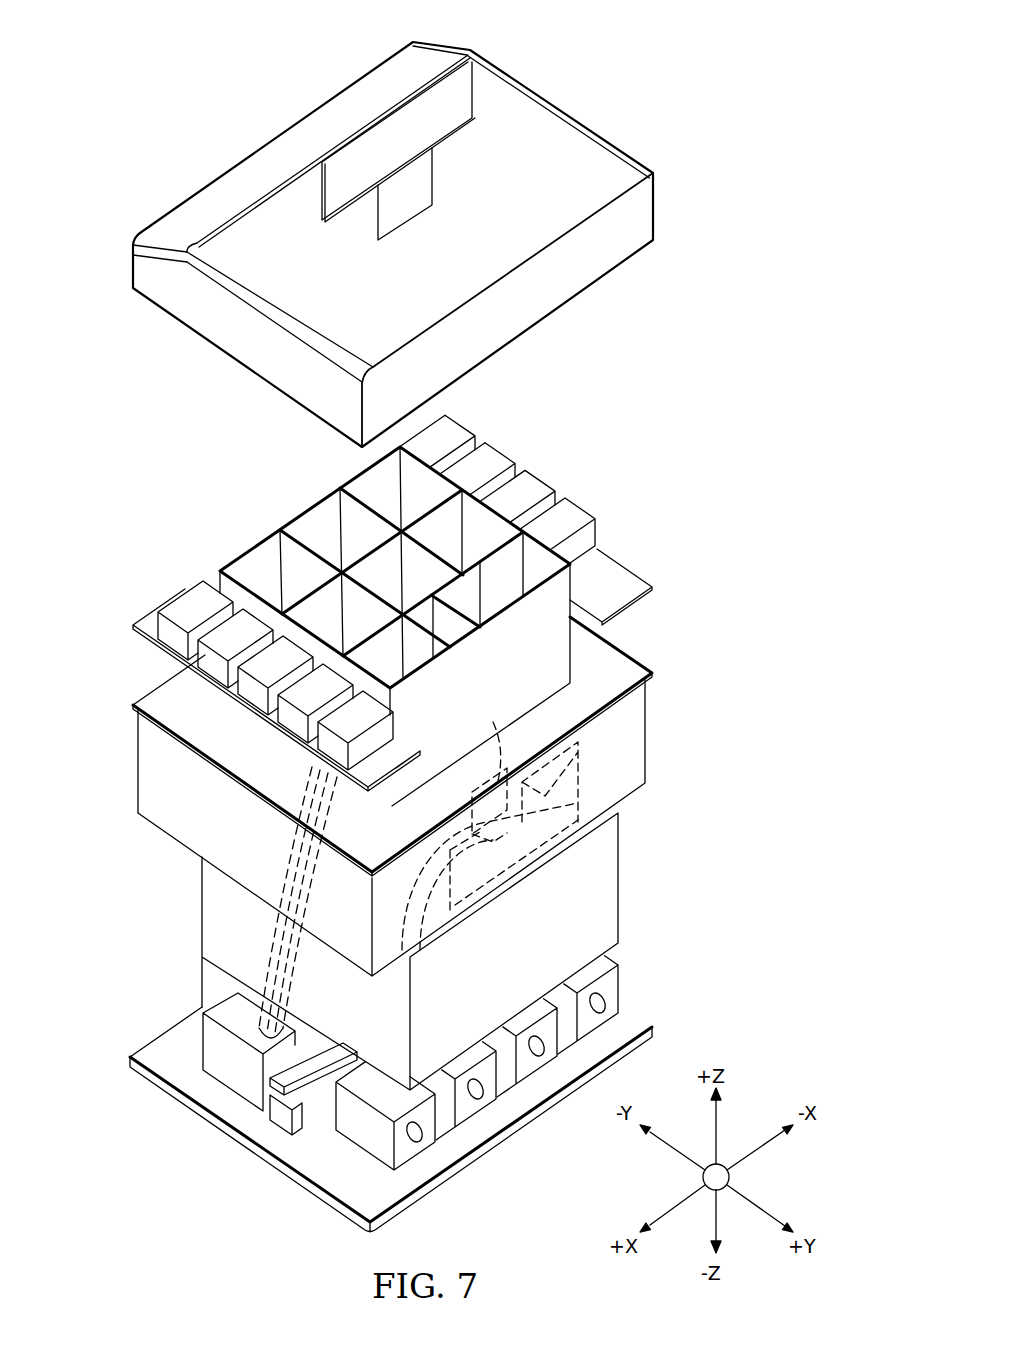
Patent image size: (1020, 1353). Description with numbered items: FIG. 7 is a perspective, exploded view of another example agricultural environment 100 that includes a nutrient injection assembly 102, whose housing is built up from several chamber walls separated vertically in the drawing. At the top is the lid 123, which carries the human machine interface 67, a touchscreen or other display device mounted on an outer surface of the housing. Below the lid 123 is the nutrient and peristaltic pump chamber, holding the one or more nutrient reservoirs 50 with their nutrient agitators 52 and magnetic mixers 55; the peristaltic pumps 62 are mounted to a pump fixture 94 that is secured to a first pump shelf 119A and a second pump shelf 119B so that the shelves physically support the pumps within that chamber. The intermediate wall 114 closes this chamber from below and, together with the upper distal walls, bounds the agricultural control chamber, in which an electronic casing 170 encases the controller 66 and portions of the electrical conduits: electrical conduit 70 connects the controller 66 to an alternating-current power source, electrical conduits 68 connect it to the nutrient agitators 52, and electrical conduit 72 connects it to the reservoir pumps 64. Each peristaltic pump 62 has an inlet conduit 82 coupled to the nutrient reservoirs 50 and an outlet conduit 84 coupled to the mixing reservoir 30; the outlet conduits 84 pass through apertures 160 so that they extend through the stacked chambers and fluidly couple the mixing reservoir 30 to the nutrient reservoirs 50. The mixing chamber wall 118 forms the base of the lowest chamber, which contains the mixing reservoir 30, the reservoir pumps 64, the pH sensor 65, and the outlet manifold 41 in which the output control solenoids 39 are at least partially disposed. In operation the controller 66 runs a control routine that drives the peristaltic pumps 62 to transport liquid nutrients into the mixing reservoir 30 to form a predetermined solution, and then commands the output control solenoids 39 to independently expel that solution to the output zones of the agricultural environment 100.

The agricultural environment 100 is at (668, 43).
The nutrient injection assembly 102 is at (686, 329).
The lid 123 is at (568, 128).
The human machine interface (HMI) 67 is at (373, 118).
The nutrient reservoirs 50 is at (451, 611).
The nutrient agitators 52 is at (451, 611).
The magnetic mixers 55 is at (472, 522).
The peristaltic pumps 62 is at (540, 489).
The pump fixture 94 is at (580, 508).
The first pump shelf 119A is at (638, 583).
The second pump shelf 119B is at (145, 625).
The intermediate wall 114 is at (627, 667).
The electronic casing 170 is at (637, 738).
The electrical conduit 70 is at (488, 738).
The electrical conduits 68 is at (484, 828).
The electrical conduit 72 is at (560, 777).
The controller 66 is at (578, 803).
The mixing reservoir 30 is at (208, 945).
The apertures 160 is at (300, 805).
The inlet conduit 82 is at (180, 849).
The outlet conduit 84 is at (272, 832).
The mixing chamber wall 118 is at (322, 1172).
The outlet manifold 41 is at (507, 1052).
The output control solenoids 39 is at (612, 968).
The reservoir pumps 64 is at (230, 1057).
The pH sensor 65 is at (270, 1092).